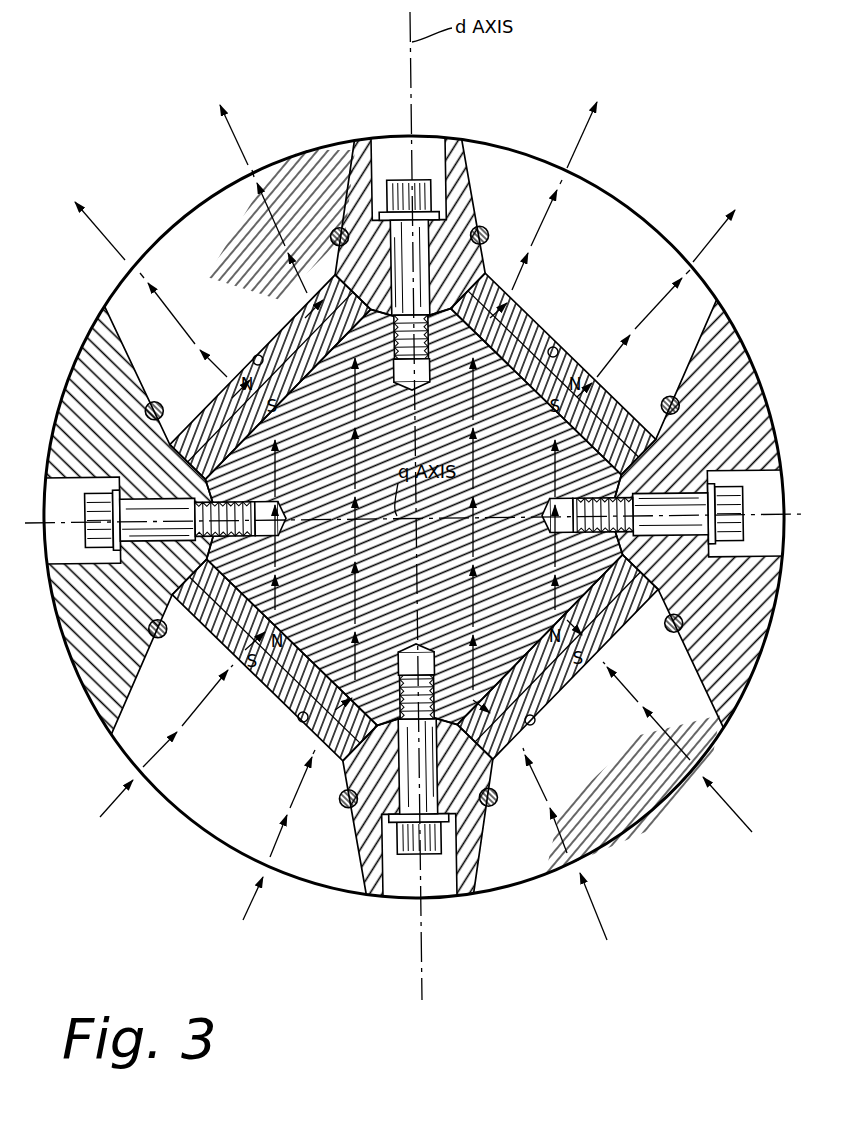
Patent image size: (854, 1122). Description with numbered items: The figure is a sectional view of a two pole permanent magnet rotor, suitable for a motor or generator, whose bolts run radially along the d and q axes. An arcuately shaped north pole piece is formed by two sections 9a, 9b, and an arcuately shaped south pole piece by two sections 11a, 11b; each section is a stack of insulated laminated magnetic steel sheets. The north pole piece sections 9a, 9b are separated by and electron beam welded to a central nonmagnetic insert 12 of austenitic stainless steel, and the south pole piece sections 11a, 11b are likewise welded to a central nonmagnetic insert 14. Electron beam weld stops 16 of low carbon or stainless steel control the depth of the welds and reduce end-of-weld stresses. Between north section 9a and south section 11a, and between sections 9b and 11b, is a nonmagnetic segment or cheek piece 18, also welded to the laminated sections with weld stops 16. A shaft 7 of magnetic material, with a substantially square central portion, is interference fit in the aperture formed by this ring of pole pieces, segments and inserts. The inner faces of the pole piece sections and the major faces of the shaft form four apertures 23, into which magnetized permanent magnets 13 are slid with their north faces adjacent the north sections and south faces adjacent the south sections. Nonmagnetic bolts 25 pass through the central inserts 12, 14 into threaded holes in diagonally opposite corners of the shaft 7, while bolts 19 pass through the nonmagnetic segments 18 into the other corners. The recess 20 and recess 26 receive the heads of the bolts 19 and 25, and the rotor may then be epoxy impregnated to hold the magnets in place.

The shaft 7 is at (405, 590).
The north pole piece section 9a is at (190, 215).
The north pole piece section 9b is at (632, 215).
The south pole piece section 11a is at (205, 828).
The south pole piece section 11b is at (630, 828).
The central nonmagnetic insert 12 is at (342, 162).
The permanent magnets 13 is at (293, 322).
The central nonmagnetic insert 14 is at (490, 855).
The electron beam weld stops 16 is at (334, 234).
The nonmagnetic segment 18 is at (90, 358).
The bolts 19 is at (77, 532).
The side bolt recess 20 is at (85, 482).
The apertures 23 is at (253, 358).
The bolts 25 is at (430, 160).
The bolt recess 26 is at (397, 160).